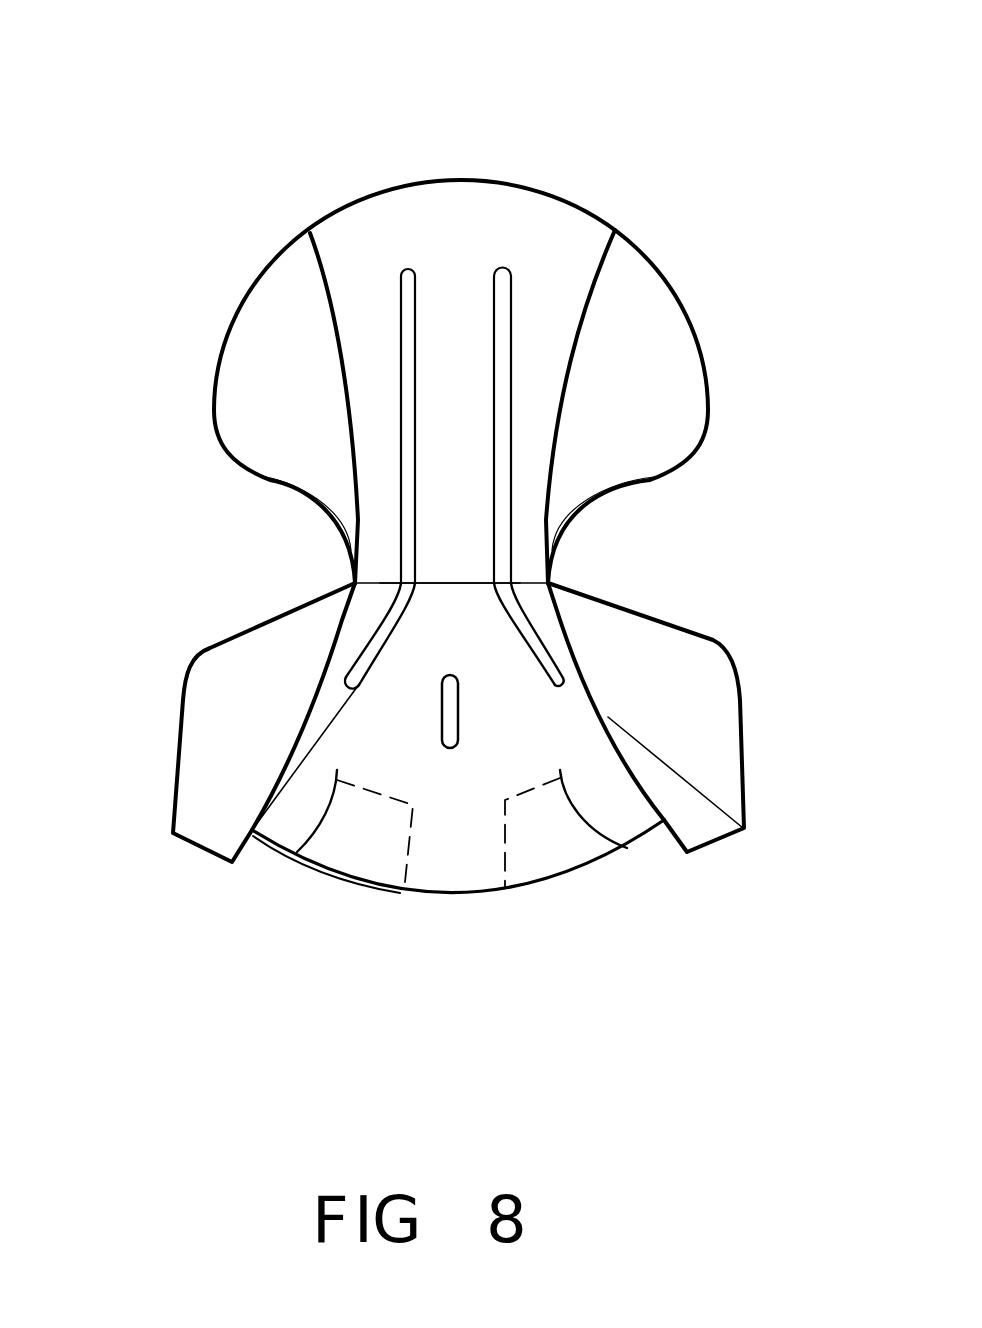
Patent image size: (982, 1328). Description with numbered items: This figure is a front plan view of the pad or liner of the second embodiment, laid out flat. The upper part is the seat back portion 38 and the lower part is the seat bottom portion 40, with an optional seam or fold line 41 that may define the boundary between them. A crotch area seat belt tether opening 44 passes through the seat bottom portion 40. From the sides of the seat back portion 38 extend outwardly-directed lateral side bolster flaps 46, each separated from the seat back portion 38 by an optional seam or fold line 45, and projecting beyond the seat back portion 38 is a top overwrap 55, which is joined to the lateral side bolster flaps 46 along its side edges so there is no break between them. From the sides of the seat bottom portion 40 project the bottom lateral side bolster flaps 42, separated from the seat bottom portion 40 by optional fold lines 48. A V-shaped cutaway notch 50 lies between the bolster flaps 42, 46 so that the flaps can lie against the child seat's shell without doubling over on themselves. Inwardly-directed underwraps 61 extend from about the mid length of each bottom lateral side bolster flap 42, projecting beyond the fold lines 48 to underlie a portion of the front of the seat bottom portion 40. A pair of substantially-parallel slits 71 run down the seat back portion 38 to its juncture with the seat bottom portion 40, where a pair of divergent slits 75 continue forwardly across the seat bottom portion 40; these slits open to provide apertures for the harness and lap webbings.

The seat back portion 38 is at (466, 248).
The seat bottom portion 40 is at (417, 690).
The seam or fold line 41 is at (453, 582).
The bottom lateral side bolster flaps 42 is at (232, 743).
The crotch area seat belt tether opening 44 is at (448, 712).
The seam or fold line 45 is at (325, 297).
The lateral side bolster flaps 46 is at (298, 370).
The fold lines 48 is at (328, 667).
The "V" shaped cutaway notch 50 is at (295, 560).
The top overwrap 55 is at (558, 192).
The underwraps 61 is at (383, 825).
The substantially-parallel slits 71 is at (403, 265).
The divergent slits 75 is at (352, 682).